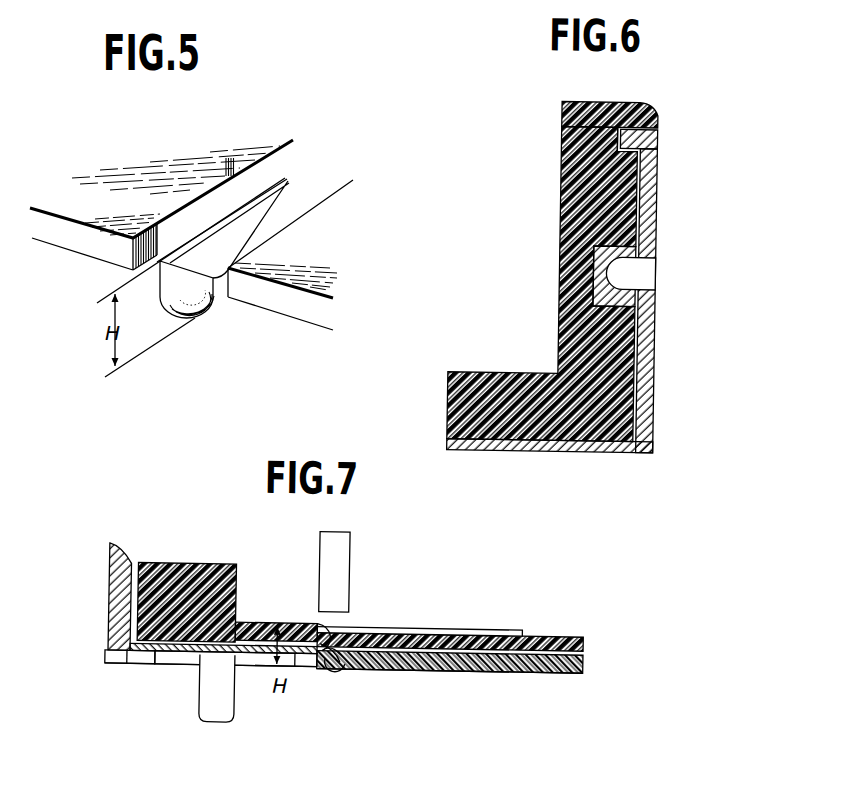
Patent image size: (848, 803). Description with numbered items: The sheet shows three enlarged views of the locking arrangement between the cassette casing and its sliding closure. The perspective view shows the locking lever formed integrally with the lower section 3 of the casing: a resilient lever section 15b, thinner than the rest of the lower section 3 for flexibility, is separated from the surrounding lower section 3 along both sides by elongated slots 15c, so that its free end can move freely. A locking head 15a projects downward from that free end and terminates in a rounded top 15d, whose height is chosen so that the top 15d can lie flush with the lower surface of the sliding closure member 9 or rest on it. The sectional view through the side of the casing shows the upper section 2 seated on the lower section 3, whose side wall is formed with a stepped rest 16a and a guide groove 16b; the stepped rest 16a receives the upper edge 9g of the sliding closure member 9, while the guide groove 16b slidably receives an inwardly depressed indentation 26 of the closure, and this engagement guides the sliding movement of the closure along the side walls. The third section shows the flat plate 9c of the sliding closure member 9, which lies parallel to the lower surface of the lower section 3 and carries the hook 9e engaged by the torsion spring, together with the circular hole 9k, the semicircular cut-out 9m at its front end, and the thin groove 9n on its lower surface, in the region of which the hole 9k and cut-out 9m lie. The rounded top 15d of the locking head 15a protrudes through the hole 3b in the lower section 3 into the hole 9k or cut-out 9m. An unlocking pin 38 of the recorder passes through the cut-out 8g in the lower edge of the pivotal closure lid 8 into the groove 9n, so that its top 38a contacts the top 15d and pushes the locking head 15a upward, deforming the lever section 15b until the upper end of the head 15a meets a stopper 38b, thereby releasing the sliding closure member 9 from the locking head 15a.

In FIG. 5, the lower section 3 is at (72, 240).
In FIG. 6, the lower section 3 is at (562, 189).
In FIG. 7, the lower section 3 is at (207, 573).
In FIG. 5, the locking head 15a is at (185, 297).
In FIG. 7, the locking head 15a is at (347, 670).
In FIG. 5, the resilient lever section 15b is at (257, 223).
In FIG. 7, the resilient lever section 15b is at (385, 637).
In FIG. 5, the elongated slots 15c is at (217, 220).
In FIG. 7, the elongated slots 15c is at (480, 630).
In FIG. 5, the rounded top 15d is at (195, 318).
In FIG. 7, the rounded top 15d is at (347, 672).
In FIG. 6, the upper section 2 is at (562, 115).
In FIG. 6, the stepped rests 16a is at (620, 128).
In FIG. 6, the guide grooves 16b is at (598, 300).
In FIG. 6, the inwardly depressed indentations 26 is at (612, 282).
In FIG. 6, the sliding closure member 9 is at (572, 310).
In FIG. 7, the sliding closure member 9 is at (354, 703).
In FIG. 6, the flat plate 9c is at (523, 455).
In FIG. 6, the hook 9e is at (652, 373).
In FIG. 6, the upper edges 9g is at (635, 153).
In FIG. 7, the pivotal closure lid 8 is at (108, 598).
In FIG. 7, the cut-out 8g is at (115, 660).
In FIG. 7, the semicircular cut-out 9m is at (145, 655).
In FIG. 7, the thin groove 9n is at (295, 663).
In FIG. 7, the circular hole 9k is at (332, 668).
In FIG. 7, the unlocking pin 38 is at (236, 700).
In FIG. 7, the top of unlocking pin 38a is at (223, 648).
In FIG. 7, the stopper 38b is at (340, 553).
In FIG. 7, the hole 3b is at (357, 668).